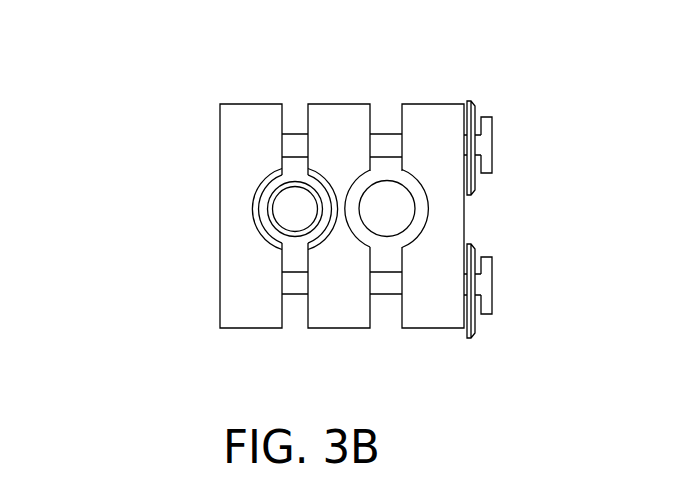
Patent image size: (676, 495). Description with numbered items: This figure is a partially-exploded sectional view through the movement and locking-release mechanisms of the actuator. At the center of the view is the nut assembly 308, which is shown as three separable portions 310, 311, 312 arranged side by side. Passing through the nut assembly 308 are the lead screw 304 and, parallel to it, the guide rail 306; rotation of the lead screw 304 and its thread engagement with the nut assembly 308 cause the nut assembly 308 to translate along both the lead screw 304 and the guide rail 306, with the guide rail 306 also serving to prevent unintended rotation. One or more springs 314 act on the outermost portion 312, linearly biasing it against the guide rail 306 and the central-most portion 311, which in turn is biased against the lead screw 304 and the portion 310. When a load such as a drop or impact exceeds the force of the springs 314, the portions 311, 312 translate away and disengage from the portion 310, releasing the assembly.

The nut assembly 308 is at (140, 78).
The portion of the nut assembly 310 is at (237, 103).
The central-most portion of the nut assembly 311 is at (343, 103).
The portion of the nut assembly 312 is at (432, 103).
The lead screw 304 is at (268, 207).
The guide rail 306 is at (416, 207).
The springs 314 is at (475, 107).